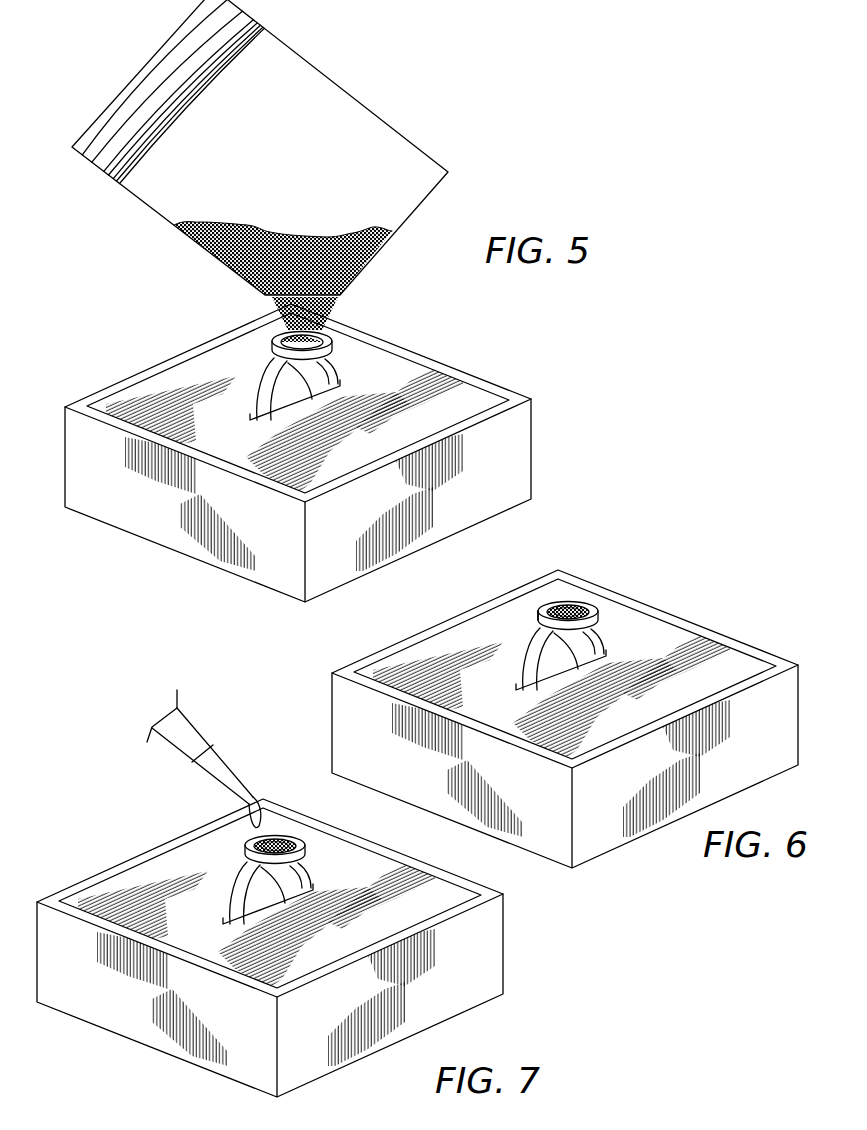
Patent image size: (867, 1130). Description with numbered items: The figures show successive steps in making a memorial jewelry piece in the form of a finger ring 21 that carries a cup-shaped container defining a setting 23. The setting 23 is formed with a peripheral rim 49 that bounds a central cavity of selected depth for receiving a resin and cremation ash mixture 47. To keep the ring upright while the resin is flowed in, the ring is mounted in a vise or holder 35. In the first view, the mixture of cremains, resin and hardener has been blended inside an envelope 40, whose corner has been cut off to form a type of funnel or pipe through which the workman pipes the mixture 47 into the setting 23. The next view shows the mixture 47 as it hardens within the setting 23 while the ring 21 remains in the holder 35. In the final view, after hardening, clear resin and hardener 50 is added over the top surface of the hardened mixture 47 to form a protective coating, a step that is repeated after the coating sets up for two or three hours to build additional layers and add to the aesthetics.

In FIG. 5, the finger ring 21 is at (379, 357).
In FIG. 6, the finger ring 21 is at (587, 607).
In FIG. 7, the finger ring 21 is at (336, 840).
In FIG. 5, the setting 23 is at (352, 369).
In FIG. 6, the setting 23 is at (568, 616).
In FIG. 5, the holder 35 is at (502, 445).
In FIG. 6, the holder 35 is at (740, 768).
In FIG. 7, the holder 35 is at (445, 1003).
In FIG. 5, the envelope 40 is at (358, 97).
In FIG. 5, the resin and cremation ash mixture 47 is at (293, 318).
In FIG. 6, the resin and cremation ash mixture 47 is at (568, 612).
In FIG. 7, the resin and cremation ash mixture 47 is at (275, 846).
In FIG. 6, the peripheral rim 49 is at (568, 612).
In FIG. 7, the peripheral rim 49 is at (275, 846).
In FIG. 7, the clear resin and hardener 50 is at (250, 829).